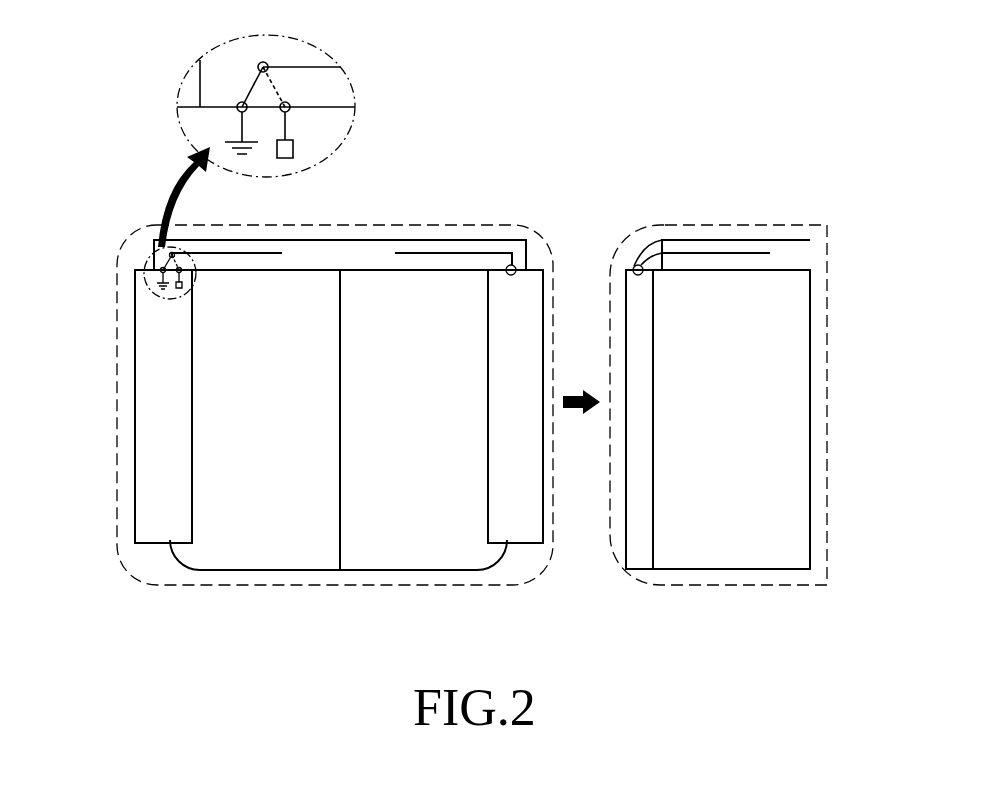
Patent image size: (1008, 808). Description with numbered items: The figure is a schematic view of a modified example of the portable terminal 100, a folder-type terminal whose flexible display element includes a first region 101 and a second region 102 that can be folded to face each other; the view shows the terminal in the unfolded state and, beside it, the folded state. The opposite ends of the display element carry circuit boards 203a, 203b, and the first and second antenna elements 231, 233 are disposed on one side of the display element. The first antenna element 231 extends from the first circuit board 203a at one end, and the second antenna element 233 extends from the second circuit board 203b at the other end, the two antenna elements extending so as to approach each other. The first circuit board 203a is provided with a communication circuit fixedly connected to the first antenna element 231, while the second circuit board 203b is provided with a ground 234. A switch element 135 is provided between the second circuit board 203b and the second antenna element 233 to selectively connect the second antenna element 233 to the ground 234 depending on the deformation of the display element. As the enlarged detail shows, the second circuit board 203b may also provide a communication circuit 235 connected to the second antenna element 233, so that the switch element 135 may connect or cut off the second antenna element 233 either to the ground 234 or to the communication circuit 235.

The portable terminal 100 is at (112, 388).
The first region 101 is at (437, 548).
The second region 102 is at (247, 548).
The switch element 135 is at (246, 75).
The first circuit board 203a is at (527, 535).
The second circuit board 203b is at (155, 535).
The first antenna element 231 is at (450, 253).
The second antenna element 233 is at (302, 67).
The ground 234 is at (232, 140).
The communication circuit 235 is at (296, 150).